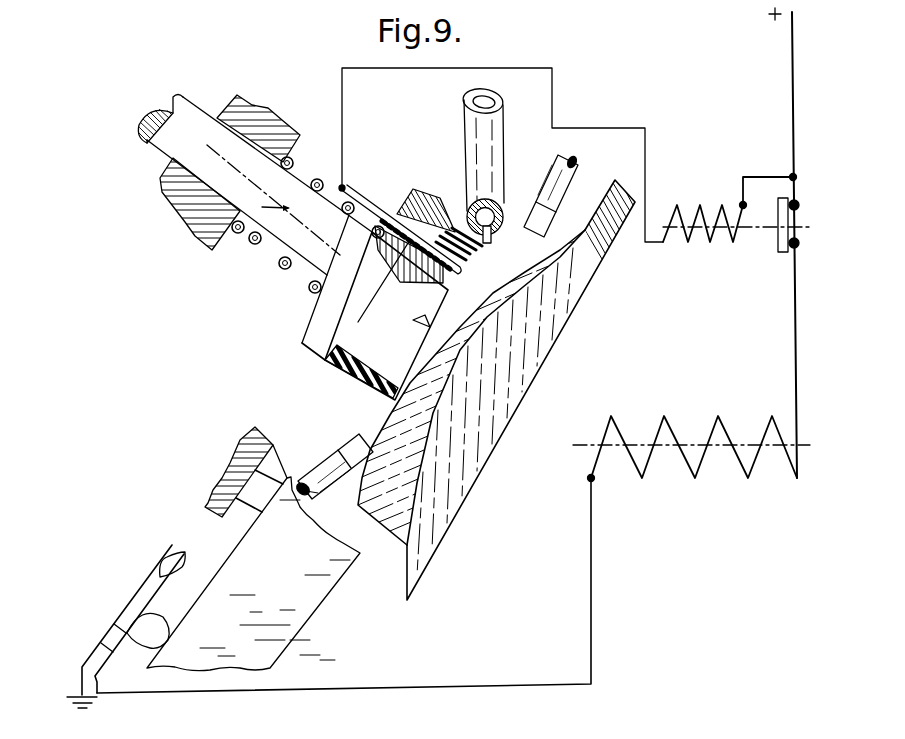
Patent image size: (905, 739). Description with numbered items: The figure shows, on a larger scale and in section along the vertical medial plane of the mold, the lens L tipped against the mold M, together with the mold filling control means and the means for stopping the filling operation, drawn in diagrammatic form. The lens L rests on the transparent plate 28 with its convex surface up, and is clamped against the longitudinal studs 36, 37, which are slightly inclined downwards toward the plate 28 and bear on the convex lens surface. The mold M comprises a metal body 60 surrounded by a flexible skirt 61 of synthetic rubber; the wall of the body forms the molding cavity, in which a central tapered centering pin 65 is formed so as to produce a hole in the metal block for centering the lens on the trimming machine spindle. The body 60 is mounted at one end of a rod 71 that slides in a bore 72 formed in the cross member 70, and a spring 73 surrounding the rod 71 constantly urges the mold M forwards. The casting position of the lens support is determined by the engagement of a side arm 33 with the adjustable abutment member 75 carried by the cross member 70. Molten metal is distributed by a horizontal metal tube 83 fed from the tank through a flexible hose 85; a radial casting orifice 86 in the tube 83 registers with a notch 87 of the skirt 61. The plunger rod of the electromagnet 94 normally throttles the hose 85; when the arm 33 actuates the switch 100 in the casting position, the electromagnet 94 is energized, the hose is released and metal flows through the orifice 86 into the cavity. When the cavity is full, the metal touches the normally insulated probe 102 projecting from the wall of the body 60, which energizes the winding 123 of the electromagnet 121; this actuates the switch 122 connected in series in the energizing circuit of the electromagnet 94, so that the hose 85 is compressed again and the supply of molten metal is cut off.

The transparent plate 28 is at (467, 480).
The side arm 33 is at (312, 605).
The longitudinal stud 36 is at (560, 177).
The longitudinal stud 37 is at (338, 453).
The metal body 60 is at (333, 316).
The flexible skirt 61 is at (363, 382).
The central tapered centering pin 65 is at (466, 312).
The cross member 70 is at (202, 213).
The rod 71 is at (278, 228).
The bore 72 is at (185, 165).
The spring 73 is at (283, 267).
The adjustable abutment member 75 is at (263, 485).
The horizontal metal tube 83 is at (467, 217).
The flexible hose 85 is at (468, 130).
The casting orifice 86 is at (503, 207).
The notch 87 is at (494, 243).
The electromagnet 94 is at (695, 429).
The switch 100 is at (128, 607).
The probe 102 is at (373, 205).
The electromagnet 121 is at (707, 210).
The switch 122 is at (780, 243).
The winding 123 is at (715, 240).
The lens L is at (442, 411).
The mold M is at (310, 358).